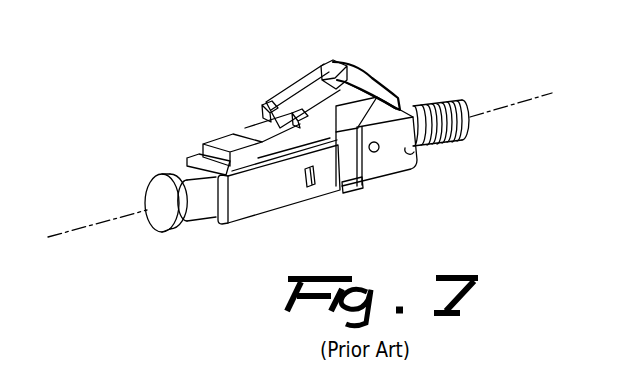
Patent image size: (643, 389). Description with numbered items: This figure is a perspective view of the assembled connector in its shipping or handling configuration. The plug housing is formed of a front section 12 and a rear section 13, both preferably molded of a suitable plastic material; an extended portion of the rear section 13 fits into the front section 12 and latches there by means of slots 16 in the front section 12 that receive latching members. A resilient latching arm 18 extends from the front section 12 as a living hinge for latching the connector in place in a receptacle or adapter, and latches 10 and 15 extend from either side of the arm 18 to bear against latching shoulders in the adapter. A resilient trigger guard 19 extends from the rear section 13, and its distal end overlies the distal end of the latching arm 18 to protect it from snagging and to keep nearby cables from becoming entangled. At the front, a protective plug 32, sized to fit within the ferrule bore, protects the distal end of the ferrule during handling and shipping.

The latch 10 is at (262, 106).
The front section 12 is at (242, 203).
The rear section 13 is at (390, 165).
The latch 15 is at (298, 116).
The slot 16 is at (309, 187).
The resilient latching arm 18 is at (298, 93).
The resilient trigger guard 19 is at (368, 83).
The protective plug 32 is at (158, 190).